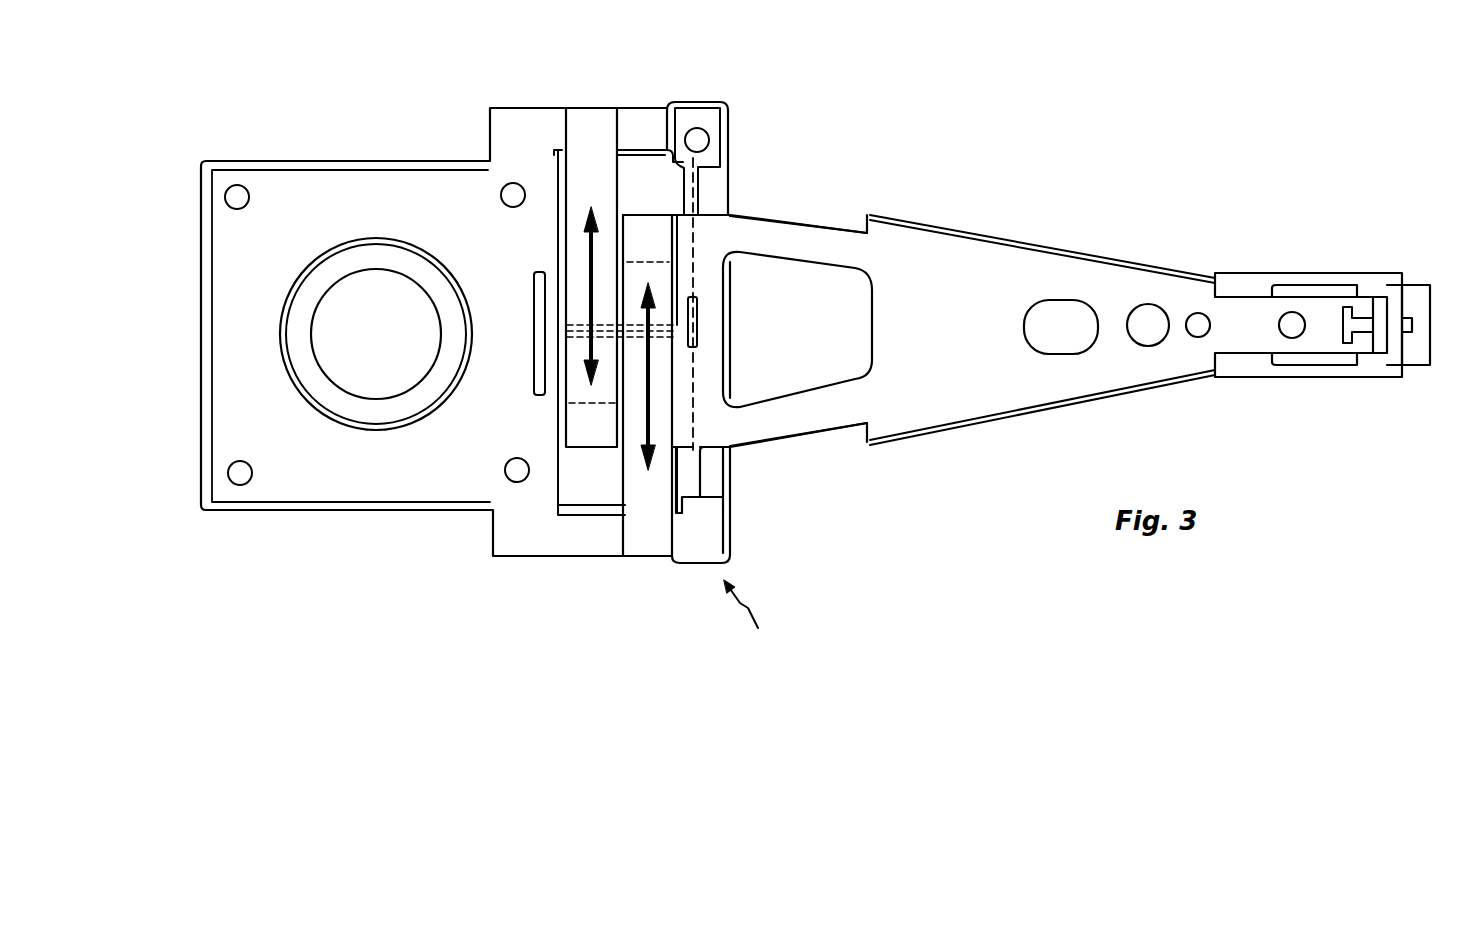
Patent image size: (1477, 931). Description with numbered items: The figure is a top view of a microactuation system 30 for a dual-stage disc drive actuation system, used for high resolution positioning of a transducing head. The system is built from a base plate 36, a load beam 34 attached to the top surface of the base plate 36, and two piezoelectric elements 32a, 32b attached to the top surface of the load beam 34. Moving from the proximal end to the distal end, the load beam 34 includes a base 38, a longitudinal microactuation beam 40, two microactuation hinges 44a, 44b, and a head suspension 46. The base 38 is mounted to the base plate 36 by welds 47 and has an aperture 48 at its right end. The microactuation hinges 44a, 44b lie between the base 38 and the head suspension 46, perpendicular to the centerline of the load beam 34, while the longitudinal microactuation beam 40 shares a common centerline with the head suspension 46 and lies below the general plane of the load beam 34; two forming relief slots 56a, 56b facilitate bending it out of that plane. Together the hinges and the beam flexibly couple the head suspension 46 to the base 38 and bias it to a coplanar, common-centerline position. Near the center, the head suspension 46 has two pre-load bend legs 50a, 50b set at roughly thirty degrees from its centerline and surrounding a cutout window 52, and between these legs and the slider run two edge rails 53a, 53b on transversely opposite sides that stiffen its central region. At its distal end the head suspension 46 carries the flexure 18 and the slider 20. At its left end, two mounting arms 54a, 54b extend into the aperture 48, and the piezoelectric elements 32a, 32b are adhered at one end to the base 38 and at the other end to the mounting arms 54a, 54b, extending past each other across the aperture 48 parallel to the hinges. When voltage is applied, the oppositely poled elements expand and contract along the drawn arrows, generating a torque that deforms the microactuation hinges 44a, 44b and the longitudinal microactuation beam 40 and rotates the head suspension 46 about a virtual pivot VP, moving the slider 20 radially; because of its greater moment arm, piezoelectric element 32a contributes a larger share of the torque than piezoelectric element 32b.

The flexure 18 is at (1375, 377).
The slider 20 is at (1415, 350).
The microactuation system 30 is at (942, 60).
The piezoelectric element 32a is at (578, 125).
The piezoelectric element 32b is at (652, 540).
The load beam 34 is at (757, 615).
The base plate 36 is at (205, 505).
The base 38 is at (278, 187).
The longitudinal microactuation beam 40 is at (565, 343).
The microactuation hinge 44a is at (700, 182).
The microactuation hinge 44b is at (705, 478).
The head suspension 46 is at (953, 243).
The welds 47 is at (237, 196).
The aperture 48 is at (647, 182).
The pre-load bend leg 50a is at (768, 233).
The pre-load bend leg 50b is at (782, 420).
The cutout window 52 is at (842, 283).
The edge rail 53a is at (1073, 250).
The edge rail 53b is at (1065, 403).
The mounting arm 54a is at (633, 233).
The mounting arm 54b is at (585, 433).
The forming relief slot 56a is at (535, 315).
The forming relief slot 56b is at (688, 318).
The virtual pivot VP is at (675, 333).